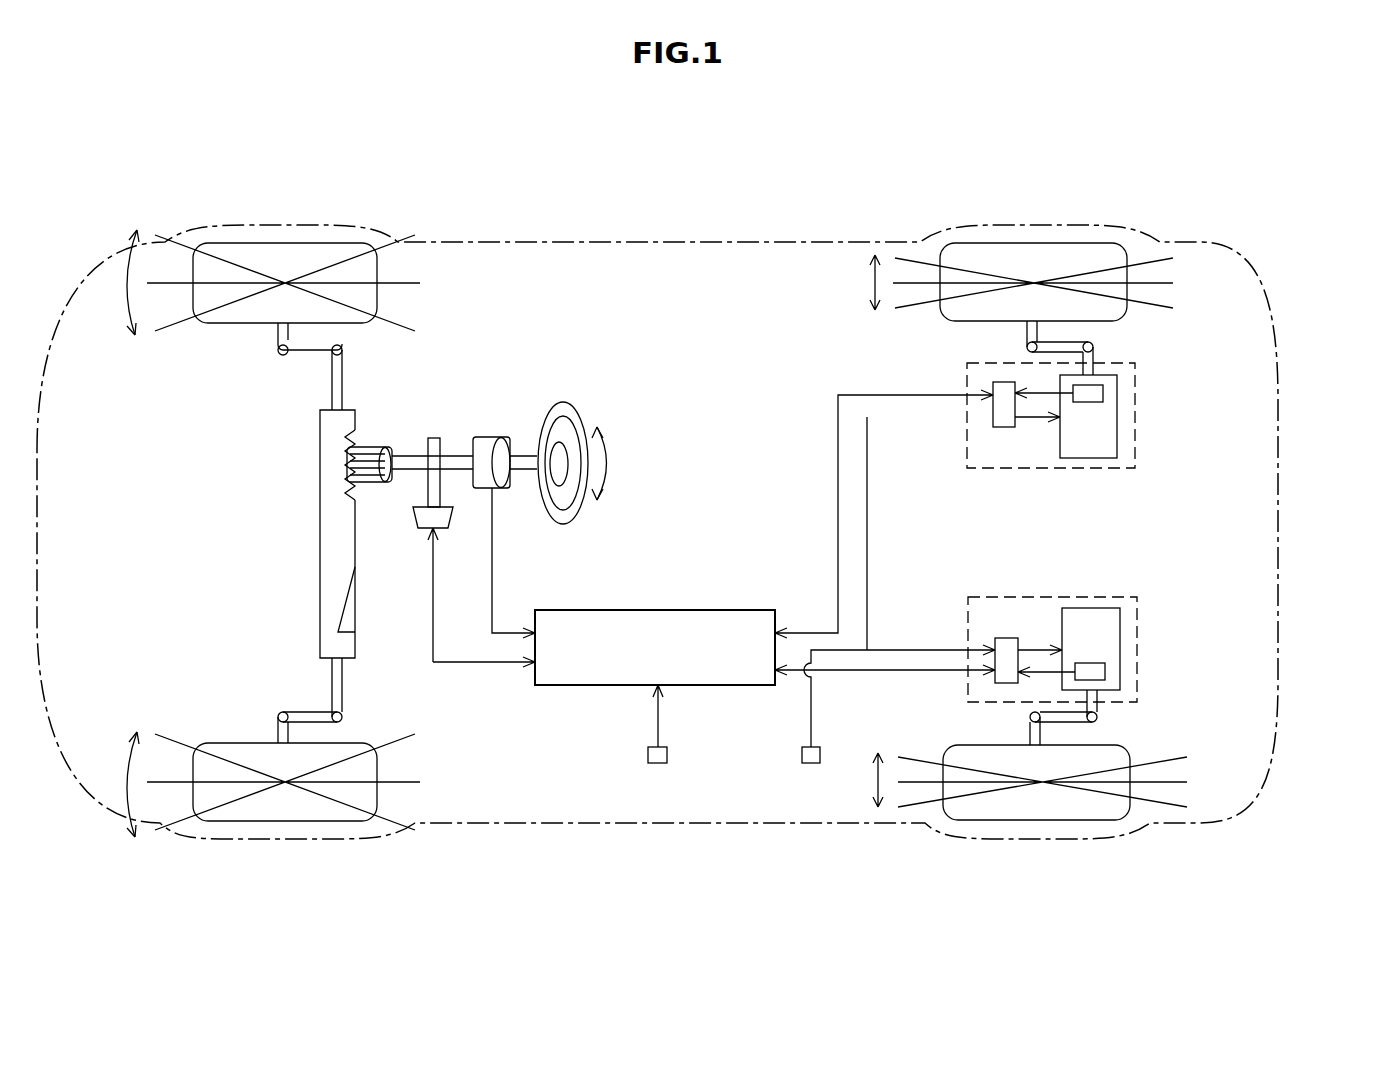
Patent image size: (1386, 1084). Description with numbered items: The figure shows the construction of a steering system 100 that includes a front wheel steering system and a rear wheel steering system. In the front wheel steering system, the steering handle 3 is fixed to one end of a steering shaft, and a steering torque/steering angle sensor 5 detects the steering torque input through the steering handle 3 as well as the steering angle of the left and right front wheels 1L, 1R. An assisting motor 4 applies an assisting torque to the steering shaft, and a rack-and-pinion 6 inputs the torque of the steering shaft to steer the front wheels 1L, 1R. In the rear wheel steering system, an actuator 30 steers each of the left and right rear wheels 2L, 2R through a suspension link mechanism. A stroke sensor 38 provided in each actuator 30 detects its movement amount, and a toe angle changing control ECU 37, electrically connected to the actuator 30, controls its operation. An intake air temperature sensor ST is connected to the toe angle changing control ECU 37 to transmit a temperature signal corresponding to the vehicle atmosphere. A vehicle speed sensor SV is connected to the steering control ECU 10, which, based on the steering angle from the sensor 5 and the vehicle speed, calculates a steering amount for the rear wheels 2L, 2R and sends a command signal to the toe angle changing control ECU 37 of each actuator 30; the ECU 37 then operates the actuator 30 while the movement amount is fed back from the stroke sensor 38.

The steering system 100 is at (869, 211).
The right front wheel 1R is at (300, 243).
The left front wheel 1L is at (297, 821).
The right rear wheel 2R is at (1060, 243).
The left rear wheel 2L is at (1092, 820).
The steering handle 3 is at (580, 437).
The assisting motor 4 is at (455, 520).
The steering torque/steering angle sensor 5 is at (490, 437).
The rack-and-pinion 6 is at (320, 453).
The steering control ECU 10 is at (645, 610).
The actuator 30 is at (1137, 411).
The toe angle changing control ECU 37 is at (1005, 427).
The stroke sensor 38 is at (1103, 393).
The vehicle speed sensor SV is at (658, 763).
The intake air temperature sensor ST is at (811, 763).